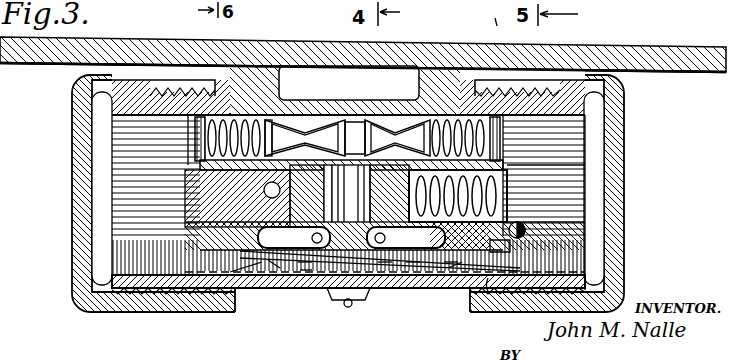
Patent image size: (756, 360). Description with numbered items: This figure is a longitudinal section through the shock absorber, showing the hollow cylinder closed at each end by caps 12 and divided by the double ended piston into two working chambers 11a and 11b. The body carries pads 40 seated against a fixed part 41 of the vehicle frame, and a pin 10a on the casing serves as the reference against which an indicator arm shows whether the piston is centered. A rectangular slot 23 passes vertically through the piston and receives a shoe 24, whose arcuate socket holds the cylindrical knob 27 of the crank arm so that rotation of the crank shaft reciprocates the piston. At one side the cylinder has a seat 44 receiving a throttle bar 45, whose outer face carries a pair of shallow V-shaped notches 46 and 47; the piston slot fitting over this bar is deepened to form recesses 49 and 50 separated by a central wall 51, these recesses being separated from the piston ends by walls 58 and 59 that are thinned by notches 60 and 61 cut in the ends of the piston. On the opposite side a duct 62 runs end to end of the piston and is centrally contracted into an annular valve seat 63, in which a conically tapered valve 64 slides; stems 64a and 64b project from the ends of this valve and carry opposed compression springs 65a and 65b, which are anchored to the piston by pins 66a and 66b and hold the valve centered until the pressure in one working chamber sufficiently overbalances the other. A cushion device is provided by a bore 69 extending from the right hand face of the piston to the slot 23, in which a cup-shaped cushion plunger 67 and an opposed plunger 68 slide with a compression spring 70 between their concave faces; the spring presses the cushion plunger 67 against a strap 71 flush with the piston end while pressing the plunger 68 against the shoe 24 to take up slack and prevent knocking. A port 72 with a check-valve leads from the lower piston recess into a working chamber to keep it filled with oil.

The pin 10a is at (346, 300).
The working chamber 11a is at (560, 189).
The working chamber 11b is at (150, 190).
The cap 12 is at (624, 118).
The slot 23 is at (272, 264).
The shoe 24 is at (290, 248).
The cylindrical knob 27 is at (419, 244).
The pad 40 is at (235, 78).
The fixed part 41 is at (672, 39).
The seat 44 is at (245, 274).
The throttle bar 45 is at (412, 272).
The V-shaped notch 46 is at (456, 268).
The V-shaped notch 47 is at (207, 258).
The recess 49 is at (380, 272).
The recess 50 is at (301, 264).
The central wall 51 is at (305, 270).
The wall 58 is at (450, 264).
The wall 59 is at (222, 282).
The notch 60 is at (491, 286).
The notch 61 is at (173, 252).
The duct 62 is at (396, 118).
The annular valve seat 63 is at (340, 118).
The valve 64 is at (356, 118).
The stem 64a is at (446, 118).
The stem 64b is at (266, 62).
The compression spring 65a is at (510, 96).
The compression spring 65b is at (206, 92).
The pin 66a is at (508, 153).
The pin 66b is at (200, 143).
The cushion plunger 67 is at (512, 178).
The plunger 68 is at (410, 174).
The bore 69 is at (386, 238).
The compression spring 70 is at (566, 226).
The strap 71 is at (514, 200).
The port 72 is at (493, 14).